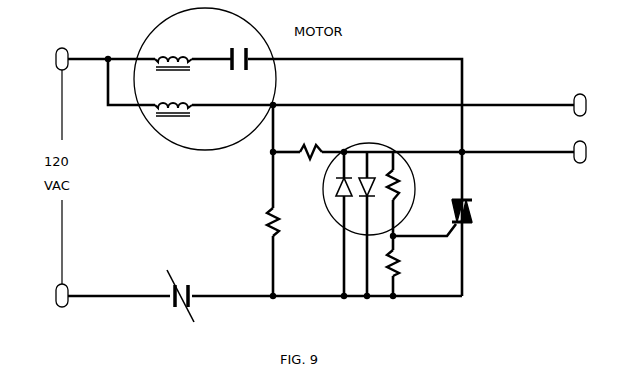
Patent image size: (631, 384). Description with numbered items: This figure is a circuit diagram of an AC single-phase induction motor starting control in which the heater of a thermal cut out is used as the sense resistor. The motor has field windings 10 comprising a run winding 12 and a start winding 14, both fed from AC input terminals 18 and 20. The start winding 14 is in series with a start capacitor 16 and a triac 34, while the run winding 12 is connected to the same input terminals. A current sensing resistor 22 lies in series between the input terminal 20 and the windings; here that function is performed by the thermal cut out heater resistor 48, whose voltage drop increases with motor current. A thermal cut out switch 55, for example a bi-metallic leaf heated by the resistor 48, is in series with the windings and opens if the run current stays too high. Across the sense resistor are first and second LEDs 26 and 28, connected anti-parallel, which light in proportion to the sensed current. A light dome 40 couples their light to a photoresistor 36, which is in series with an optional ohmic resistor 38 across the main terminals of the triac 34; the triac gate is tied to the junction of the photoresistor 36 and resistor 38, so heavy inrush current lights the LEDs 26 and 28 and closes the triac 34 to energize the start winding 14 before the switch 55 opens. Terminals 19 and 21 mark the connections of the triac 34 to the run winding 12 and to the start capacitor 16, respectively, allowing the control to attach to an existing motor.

The field windings 10 is at (246, 132).
The run winding 12 is at (187, 91).
The start winding 14 is at (182, 50).
The start capacitor 16 is at (235, 46).
The AC input terminal 18 is at (47, 59).
The terminal 19 is at (591, 152).
The AC input terminal 20 is at (47, 295).
The terminal 21 is at (591, 105).
The current sensing resistor 22 is at (315, 148).
The first LED 26 is at (332, 197).
The second LED 28 is at (367, 170).
The triac 34 is at (475, 208).
The photoresistor 36 is at (405, 196).
The ohmic resistor 38 is at (400, 256).
The light dome 40 is at (334, 225).
The thermal cut out heater resistor 48 is at (258, 222).
The thermal cut out switch 55 is at (193, 288).